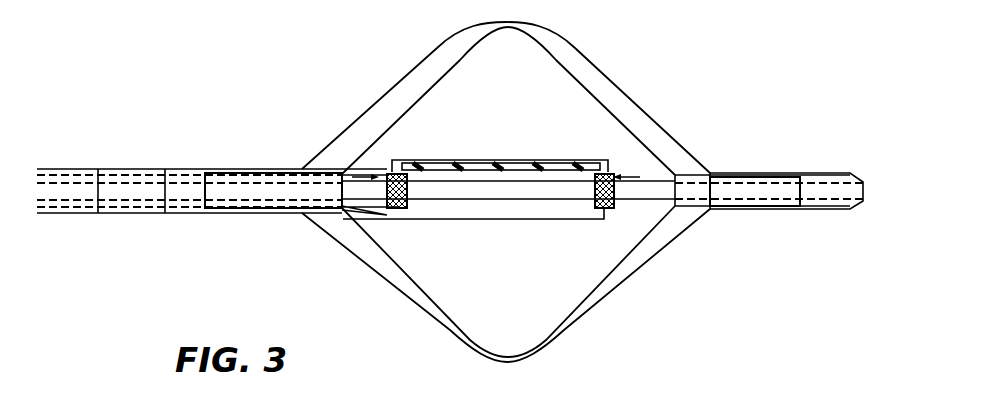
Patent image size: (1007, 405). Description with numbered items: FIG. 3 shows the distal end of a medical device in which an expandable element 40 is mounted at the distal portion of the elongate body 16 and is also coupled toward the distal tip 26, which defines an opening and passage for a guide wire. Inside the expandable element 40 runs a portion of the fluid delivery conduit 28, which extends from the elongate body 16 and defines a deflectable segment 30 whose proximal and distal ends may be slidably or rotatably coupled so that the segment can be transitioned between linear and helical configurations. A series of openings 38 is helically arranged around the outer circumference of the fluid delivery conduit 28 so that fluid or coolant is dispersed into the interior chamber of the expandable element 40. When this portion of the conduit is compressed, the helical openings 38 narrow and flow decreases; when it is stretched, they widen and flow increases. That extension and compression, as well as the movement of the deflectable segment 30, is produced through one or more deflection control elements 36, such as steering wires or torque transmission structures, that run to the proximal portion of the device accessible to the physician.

The elongate body 16 is at (83, 169).
The distal tip 26 is at (815, 172).
The fluid delivery conduit 28 is at (370, 218).
The deflectable segment 30 is at (552, 160).
The deflection control elements 36 is at (519, 221).
The openings 38 is at (495, 165).
The expandable element 40 is at (642, 97).